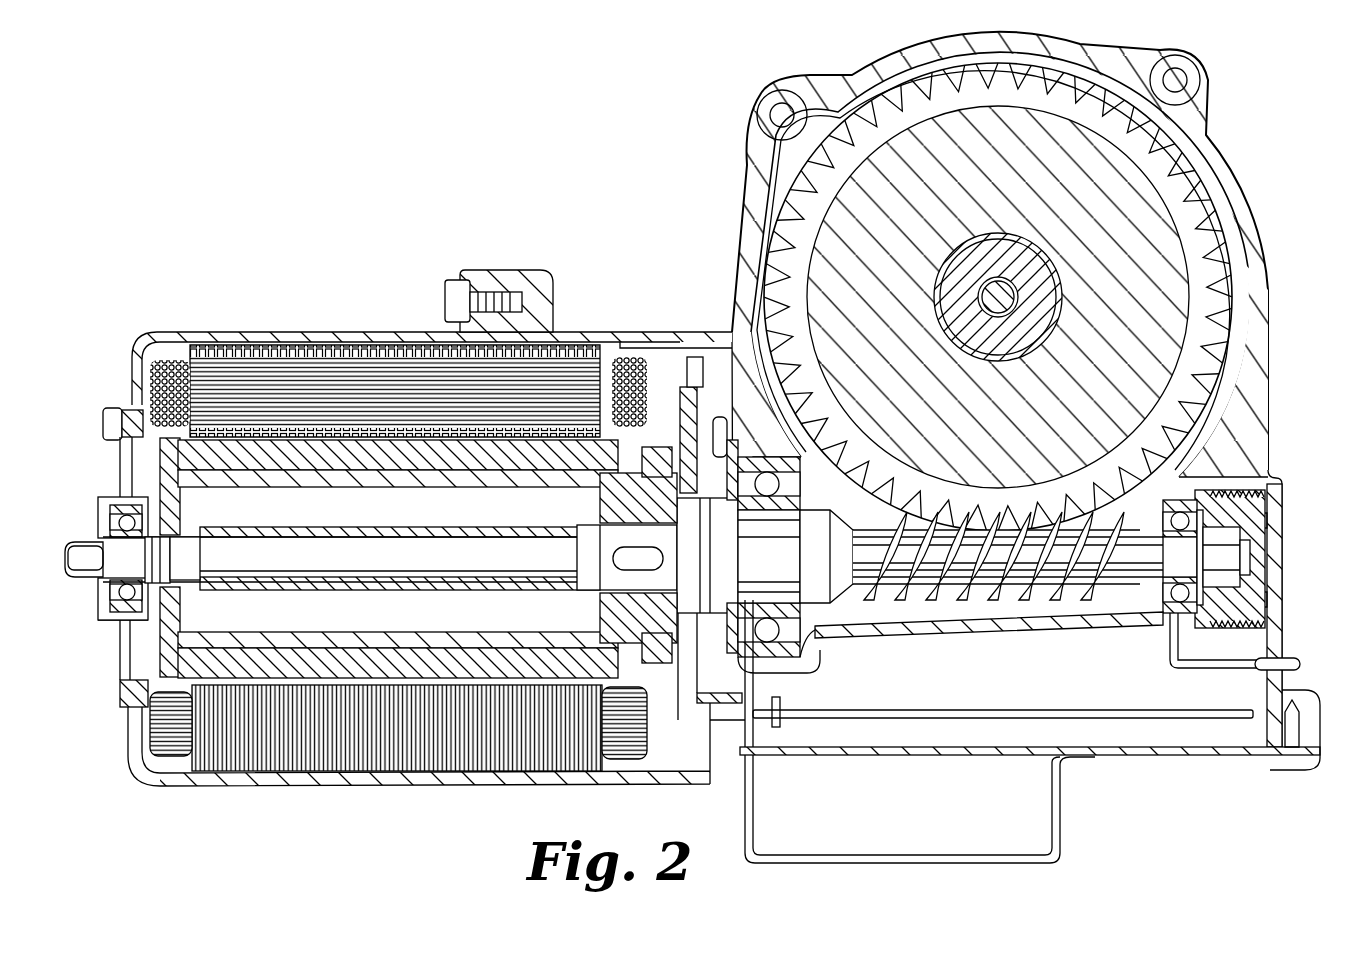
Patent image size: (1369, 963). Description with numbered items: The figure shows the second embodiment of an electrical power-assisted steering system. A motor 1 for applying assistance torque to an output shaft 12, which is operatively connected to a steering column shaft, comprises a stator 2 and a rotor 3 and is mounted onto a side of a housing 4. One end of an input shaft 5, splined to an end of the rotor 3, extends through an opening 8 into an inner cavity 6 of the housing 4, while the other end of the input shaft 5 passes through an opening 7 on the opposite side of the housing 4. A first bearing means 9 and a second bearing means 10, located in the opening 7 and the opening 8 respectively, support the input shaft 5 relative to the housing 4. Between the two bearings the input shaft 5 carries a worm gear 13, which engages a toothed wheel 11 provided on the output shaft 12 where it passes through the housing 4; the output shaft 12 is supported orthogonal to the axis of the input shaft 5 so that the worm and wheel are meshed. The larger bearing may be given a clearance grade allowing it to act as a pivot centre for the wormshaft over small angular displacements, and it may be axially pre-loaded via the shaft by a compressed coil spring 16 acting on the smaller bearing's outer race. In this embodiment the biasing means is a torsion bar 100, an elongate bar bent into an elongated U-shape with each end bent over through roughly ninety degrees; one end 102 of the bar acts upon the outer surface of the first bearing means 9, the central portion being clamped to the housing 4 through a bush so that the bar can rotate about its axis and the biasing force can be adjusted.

The motor 1 is at (283, 797).
The stator 2 is at (428, 786).
The rotor 3 is at (200, 617).
The housing 4 is at (678, 332).
The input shaft 5 is at (853, 620).
The inner cavity 6 is at (1113, 602).
The opening 7 is at (1212, 470).
The opening 8 is at (750, 695).
The first bearing means 9 is at (1165, 612).
The second bearing means 10 is at (825, 472).
The toothed wheel 11 is at (1262, 240).
The output shaft 12 is at (1050, 262).
The worm gear 13 is at (947, 600).
The compressed coil spring 16 is at (1222, 518).
The torsion bar 100 is at (1290, 645).
The end of the bar 102 is at (1262, 668).